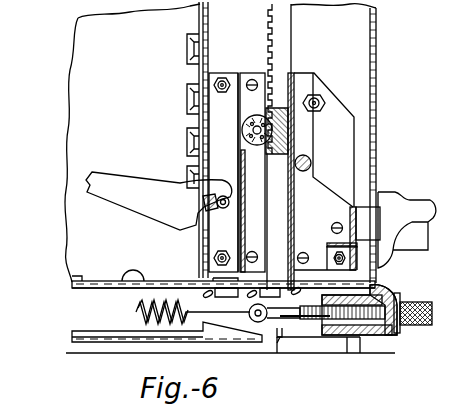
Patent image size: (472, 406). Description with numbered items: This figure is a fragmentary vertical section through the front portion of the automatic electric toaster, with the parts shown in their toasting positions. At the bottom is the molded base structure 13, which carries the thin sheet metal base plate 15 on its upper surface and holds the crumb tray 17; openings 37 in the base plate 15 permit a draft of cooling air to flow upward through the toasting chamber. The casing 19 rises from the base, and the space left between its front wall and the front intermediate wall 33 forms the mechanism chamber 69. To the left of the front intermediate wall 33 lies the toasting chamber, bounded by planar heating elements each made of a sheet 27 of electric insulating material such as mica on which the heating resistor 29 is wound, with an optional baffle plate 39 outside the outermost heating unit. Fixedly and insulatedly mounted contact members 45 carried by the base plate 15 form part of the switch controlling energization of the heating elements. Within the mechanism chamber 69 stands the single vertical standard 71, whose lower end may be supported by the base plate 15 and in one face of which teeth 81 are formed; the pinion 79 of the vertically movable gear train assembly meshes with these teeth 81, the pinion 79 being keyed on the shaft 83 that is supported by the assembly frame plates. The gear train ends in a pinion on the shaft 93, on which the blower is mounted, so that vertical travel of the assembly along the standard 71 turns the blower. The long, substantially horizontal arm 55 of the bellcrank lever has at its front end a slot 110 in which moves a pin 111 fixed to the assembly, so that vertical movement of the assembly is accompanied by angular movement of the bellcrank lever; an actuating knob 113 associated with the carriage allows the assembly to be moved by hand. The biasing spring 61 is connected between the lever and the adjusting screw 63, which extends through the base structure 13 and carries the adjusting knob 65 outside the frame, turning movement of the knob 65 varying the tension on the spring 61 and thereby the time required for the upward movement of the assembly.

The base structure 13 is at (386, 289).
The base plate 15 is at (106, 287).
The crumb tray 17 is at (76, 335).
The casing 19 is at (377, 23).
The sheet of electric insulating material 27 is at (78, 53).
The heating resistor 29 is at (188, 48).
The front intermediate wall 33 is at (210, 18).
The openings in base plate 37 is at (82, 276).
The baffle plates 39 is at (199, 15).
The contact members 45 is at (212, 293).
The long arm of bellcrank lever 55 is at (122, 181).
The biasing spring 61 is at (140, 318).
The adjusting screw 63 is at (313, 322).
The adjusting knob 65 is at (416, 328).
The mechanism chamber 69 is at (364, 65).
The vertical standard 71 is at (289, 28).
The pinion 79 is at (263, 146).
The teeth 81 is at (268, 38).
The shaft 83 is at (247, 126).
The shaft 93 is at (309, 161).
The slot 110 is at (216, 204).
The pin 111 is at (200, 221).
The actuating knob 113 is at (418, 205).